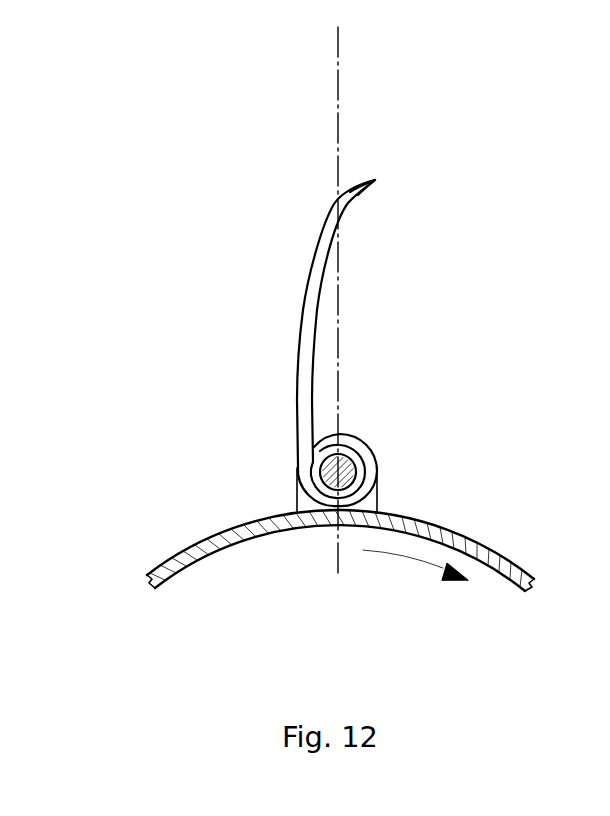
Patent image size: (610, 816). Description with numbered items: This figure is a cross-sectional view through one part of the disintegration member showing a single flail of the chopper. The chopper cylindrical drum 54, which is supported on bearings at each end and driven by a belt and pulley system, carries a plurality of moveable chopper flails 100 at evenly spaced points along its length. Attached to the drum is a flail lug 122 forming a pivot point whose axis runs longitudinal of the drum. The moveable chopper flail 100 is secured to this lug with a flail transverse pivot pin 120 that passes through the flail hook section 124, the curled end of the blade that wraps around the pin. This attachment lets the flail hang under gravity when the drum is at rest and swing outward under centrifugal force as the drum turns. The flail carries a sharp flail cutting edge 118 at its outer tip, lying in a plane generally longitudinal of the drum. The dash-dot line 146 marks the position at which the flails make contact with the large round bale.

The chopper cylindrical drum 54 is at (212, 533).
The moveable chopper flail 100 is at (305, 290).
The sharp flail cutting edge 118 is at (376, 178).
The flail transverse pivot pin 120 is at (346, 428).
The flail lug 122 is at (377, 486).
The flail hook section 124 is at (362, 457).
The line 146 is at (337, 58).